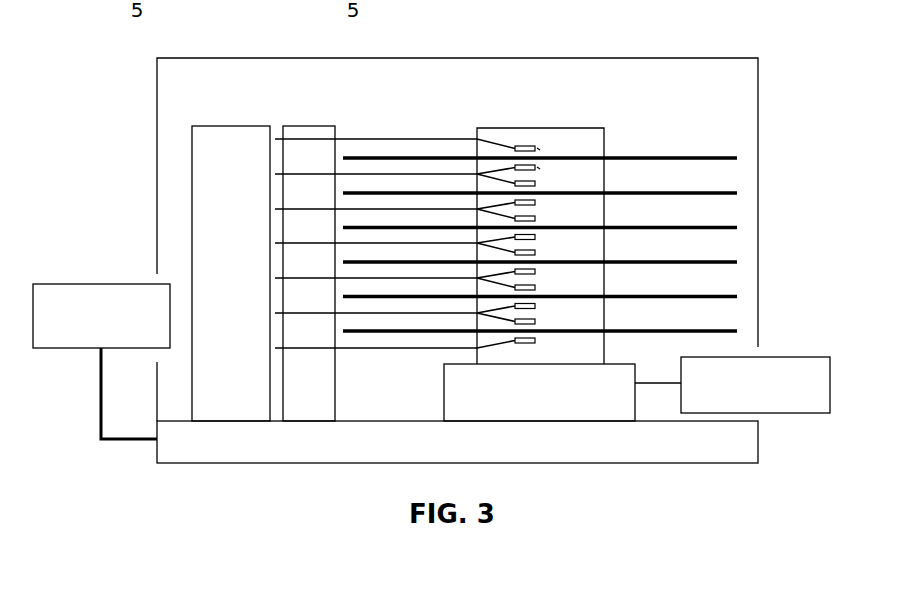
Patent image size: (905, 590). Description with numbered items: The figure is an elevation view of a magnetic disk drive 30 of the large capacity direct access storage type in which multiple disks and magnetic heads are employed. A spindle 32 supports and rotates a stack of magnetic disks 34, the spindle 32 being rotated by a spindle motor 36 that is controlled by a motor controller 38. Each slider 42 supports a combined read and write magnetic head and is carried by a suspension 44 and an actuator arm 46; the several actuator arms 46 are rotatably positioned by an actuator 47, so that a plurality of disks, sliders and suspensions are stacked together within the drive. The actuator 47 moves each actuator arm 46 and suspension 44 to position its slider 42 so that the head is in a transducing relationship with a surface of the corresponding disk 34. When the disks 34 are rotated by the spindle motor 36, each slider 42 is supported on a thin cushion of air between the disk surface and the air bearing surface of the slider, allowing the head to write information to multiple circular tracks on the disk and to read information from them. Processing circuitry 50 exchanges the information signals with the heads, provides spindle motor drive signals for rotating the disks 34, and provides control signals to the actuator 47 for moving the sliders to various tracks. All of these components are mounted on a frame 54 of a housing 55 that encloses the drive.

The magnetic disk drive 30 is at (650, 133).
The spindle 32 is at (594, 128).
The magnetic disk 34 is at (733, 160).
The spindle motor 36 is at (527, 404).
The motor controller 38 is at (790, 414).
The slider 42 is at (540, 168).
The suspension 44 is at (512, 170).
The actuator arm 46 is at (449, 173).
The actuator 47 is at (211, 130).
The processing circuitry 50 is at (73, 284).
The frame 54 is at (207, 458).
The housing 55 is at (700, 58).